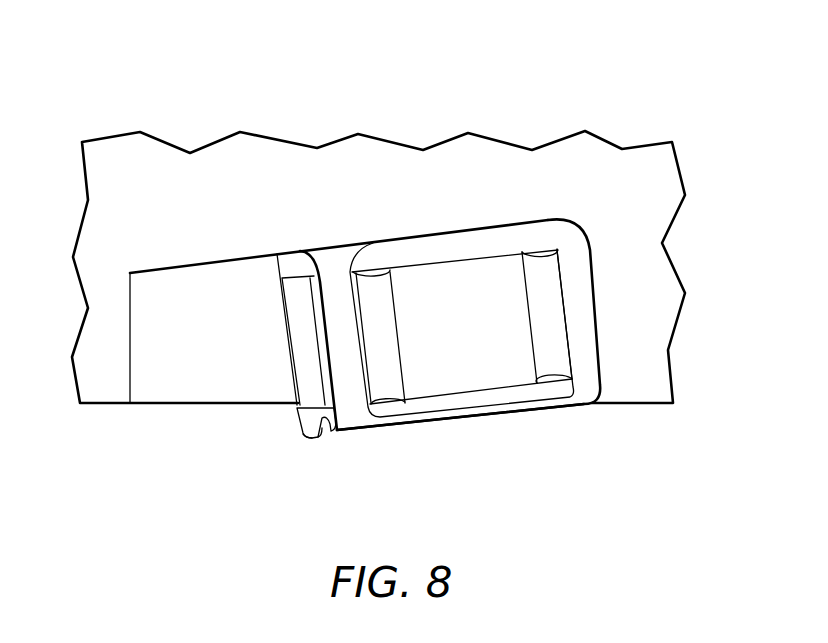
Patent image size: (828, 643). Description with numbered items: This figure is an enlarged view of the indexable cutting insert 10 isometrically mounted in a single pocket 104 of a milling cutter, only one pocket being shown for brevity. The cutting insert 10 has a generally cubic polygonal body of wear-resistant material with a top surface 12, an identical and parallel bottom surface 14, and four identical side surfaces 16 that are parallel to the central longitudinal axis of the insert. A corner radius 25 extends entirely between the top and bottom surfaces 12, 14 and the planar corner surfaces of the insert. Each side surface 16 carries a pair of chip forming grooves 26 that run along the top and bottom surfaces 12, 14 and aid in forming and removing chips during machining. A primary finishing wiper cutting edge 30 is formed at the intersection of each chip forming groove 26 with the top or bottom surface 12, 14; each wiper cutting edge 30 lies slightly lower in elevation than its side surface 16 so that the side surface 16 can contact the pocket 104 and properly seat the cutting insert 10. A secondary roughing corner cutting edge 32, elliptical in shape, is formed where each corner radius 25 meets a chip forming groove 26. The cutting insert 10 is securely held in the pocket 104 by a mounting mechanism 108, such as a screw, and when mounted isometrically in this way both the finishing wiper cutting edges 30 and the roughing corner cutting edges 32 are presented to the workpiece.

The cutting insert 10 is at (570, 422).
The top surface 12 is at (446, 232).
The bottom surface 14 is at (474, 427).
The side surface 16 is at (305, 356).
The corner radius 25 is at (353, 420).
The chip forming groove 26 is at (312, 422).
The finishing wiper cutting edge 30 is at (308, 439).
The roughing corner cutting edge 32 is at (323, 434).
The pocket 104 is at (168, 403).
The mounting mechanism 108 is at (441, 425).